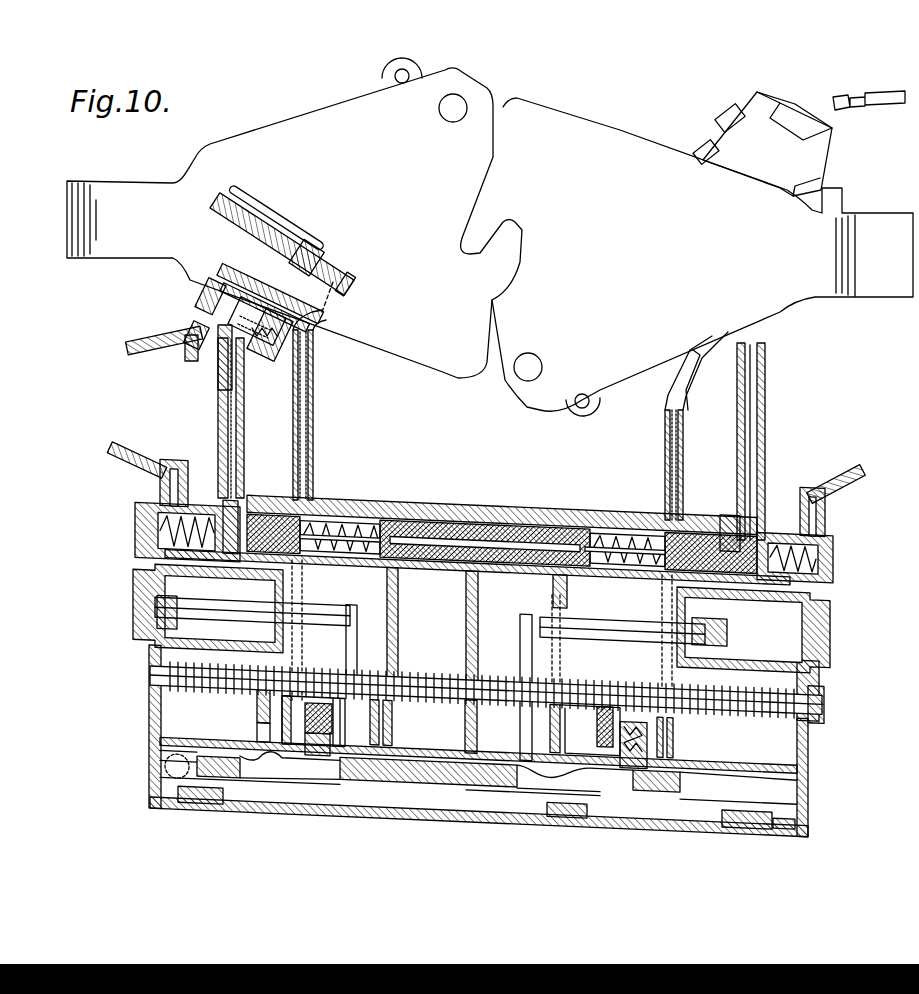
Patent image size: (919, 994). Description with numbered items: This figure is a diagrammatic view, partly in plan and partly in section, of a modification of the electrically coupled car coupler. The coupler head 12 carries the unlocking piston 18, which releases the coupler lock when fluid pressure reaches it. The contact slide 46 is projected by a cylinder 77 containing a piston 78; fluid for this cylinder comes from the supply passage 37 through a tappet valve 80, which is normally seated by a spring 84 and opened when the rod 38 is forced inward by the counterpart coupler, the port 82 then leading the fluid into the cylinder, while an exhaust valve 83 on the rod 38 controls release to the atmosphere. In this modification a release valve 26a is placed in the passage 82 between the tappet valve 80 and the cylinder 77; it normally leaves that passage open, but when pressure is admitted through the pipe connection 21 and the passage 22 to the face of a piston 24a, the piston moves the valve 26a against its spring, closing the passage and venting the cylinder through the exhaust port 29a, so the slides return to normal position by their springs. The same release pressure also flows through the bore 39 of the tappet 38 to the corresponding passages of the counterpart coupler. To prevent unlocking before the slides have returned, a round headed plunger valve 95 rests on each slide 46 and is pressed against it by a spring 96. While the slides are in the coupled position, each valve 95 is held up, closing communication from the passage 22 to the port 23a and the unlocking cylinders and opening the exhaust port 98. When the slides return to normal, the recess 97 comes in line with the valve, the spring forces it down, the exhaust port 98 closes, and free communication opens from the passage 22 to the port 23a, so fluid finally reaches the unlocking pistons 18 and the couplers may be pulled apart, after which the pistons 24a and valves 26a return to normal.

The coupler head 12 is at (372, 100).
The piston 18 is at (297, 228).
The pipe connection 21 is at (150, 358).
The passage 22 is at (296, 437).
The port 23a is at (315, 388).
The piston 24a is at (196, 318).
The valve 26a is at (262, 360).
The exhaust port 29a is at (222, 356).
The supply passage 37 is at (150, 466).
The rod 38 is at (433, 517).
The bore 39 is at (500, 522).
The slide 46 is at (433, 745).
The cylinder 77 is at (236, 642).
The piston 78 is at (158, 584).
The tappet valve 80 is at (158, 496).
The port 82 is at (218, 433).
The exhaust valve 83 is at (250, 516).
The spring 84 is at (150, 540).
The valve 95 is at (300, 756).
The spring 96 is at (342, 711).
The recess 97 is at (285, 778).
The exhaust port 98 is at (340, 724).